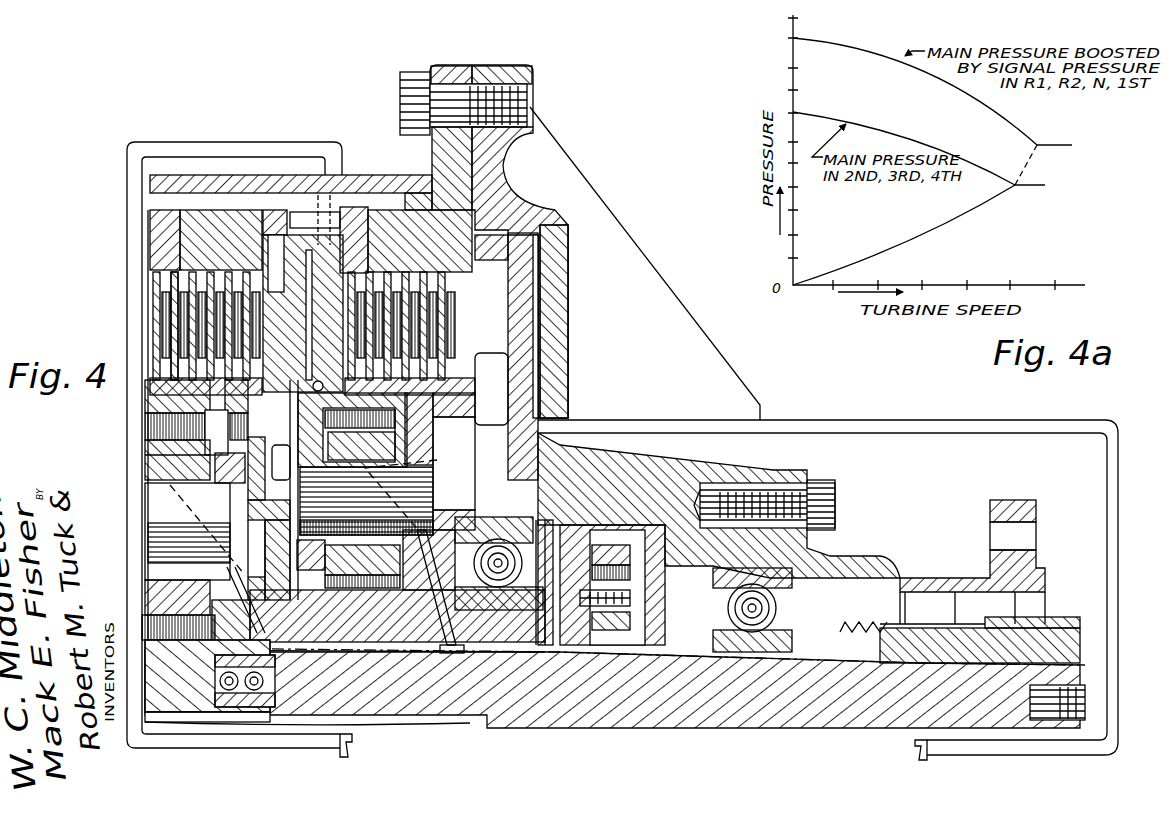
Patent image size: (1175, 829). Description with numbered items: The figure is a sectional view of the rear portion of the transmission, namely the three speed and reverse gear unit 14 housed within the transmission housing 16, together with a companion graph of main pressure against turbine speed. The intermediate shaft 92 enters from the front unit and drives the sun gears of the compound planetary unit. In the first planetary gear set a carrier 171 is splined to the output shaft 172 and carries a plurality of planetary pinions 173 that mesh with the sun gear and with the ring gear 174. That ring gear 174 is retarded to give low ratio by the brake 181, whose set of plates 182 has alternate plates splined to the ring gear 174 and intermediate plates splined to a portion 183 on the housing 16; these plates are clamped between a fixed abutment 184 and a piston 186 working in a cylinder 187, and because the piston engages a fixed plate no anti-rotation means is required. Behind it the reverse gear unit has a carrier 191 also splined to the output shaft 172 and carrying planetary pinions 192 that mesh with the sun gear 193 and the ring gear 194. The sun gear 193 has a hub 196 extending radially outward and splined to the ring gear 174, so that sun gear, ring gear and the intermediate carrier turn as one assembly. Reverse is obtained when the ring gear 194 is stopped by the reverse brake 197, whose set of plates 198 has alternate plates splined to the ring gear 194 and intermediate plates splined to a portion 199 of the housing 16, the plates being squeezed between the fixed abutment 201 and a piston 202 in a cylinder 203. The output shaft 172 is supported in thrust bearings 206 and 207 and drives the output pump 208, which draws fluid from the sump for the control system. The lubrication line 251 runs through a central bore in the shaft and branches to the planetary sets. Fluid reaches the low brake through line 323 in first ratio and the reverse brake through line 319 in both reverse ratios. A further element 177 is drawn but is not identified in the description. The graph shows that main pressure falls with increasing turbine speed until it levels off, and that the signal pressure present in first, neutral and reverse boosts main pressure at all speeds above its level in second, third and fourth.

The three speed and reverse gear unit 14 is at (209, 136).
The transmission housing 16 is at (413, 207).
The intermediate shaft 92 is at (248, 592).
The carrier 171 is at (277, 520).
The output shaft 172 is at (577, 707).
The planetary pinions 173 is at (160, 460).
The ring gear 174 is at (158, 406).
The gear hub 177 is at (180, 635).
The brake 181 is at (126, 222).
The set of plates 182 is at (170, 300).
The portion on the housing 183 is at (165, 232).
The fixed abutment 184 is at (160, 283).
The piston 186 is at (291, 233).
The cylinder 187 is at (300, 270).
The carrier 191 is at (407, 427).
The planetary pinions 192 is at (387, 442).
The sun gear 193 is at (340, 612).
The ring gear 194 is at (393, 405).
The hub 196 is at (298, 535).
The reverse ratio establishing device or brake 197 is at (472, 274).
The set of plates 198 is at (440, 300).
The portion of housing 199 is at (384, 218).
The fixed abutment 201 is at (268, 213).
The piston 202 is at (513, 328).
The cylinder 203 is at (535, 290).
The thrust bearing 206 is at (460, 540).
The thrust bearing 207 is at (793, 588).
The output pump 208 is at (627, 622).
The lubrication line 251 is at (460, 752).
The line 319 is at (623, 418).
The line 323 is at (273, 150).